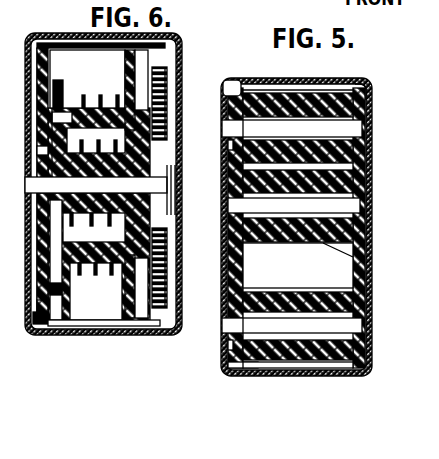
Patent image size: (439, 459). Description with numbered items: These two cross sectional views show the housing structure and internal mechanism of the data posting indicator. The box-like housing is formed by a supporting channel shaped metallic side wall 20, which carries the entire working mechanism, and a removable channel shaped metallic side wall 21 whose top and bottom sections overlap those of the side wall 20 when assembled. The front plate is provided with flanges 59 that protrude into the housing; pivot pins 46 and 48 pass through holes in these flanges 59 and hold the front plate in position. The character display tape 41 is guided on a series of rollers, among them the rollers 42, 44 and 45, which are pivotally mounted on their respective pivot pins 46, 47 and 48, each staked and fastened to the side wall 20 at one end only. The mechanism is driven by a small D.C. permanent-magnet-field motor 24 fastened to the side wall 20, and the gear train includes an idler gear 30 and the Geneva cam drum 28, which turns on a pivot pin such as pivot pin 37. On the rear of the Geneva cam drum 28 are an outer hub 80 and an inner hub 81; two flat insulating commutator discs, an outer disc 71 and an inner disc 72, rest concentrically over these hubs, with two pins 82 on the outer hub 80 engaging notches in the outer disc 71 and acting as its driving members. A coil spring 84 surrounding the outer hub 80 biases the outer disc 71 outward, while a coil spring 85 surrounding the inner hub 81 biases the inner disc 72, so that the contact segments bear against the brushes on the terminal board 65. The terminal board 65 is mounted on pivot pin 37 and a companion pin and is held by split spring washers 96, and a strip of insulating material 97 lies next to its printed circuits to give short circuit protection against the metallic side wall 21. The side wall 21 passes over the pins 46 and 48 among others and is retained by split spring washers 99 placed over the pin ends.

In FIG. 6, the supporting channel shaped metallic side wall 20 is at (162, 336).
In FIG. 5, the supporting channel shaped metallic side wall 20 is at (365, 376).
In FIG. 6, the removable channel shaped metallic side wall 21 is at (90, 337).
In FIG. 5, the removable channel shaped metallic side wall 21 is at (330, 372).
In FIG. 6, the D.C. permanent-magnet-field motor 24 is at (52, 4).
In FIG. 6, the Geneva cam drum 28 is at (135, 70).
In FIG. 6, the idler gear 30 is at (172, 71).
In FIG. 6, the pivot pin 37 is at (33, 185).
In FIG. 6, the character display tape 41 is at (118, 330).
In FIG. 5, the character display tape 41 is at (293, 370).
In FIG. 5, the roller 42 is at (280, 92).
In FIG. 5, the roller 44 is at (365, 262).
In FIG. 5, the roller 45 is at (258, 370).
In FIG. 5, the pivot pin 46 is at (222, 128).
In FIG. 5, the pivot pin 47 is at (355, 206).
In FIG. 5, the pivot pin 48 is at (222, 326).
In FIG. 5, the flanges 59 is at (236, 82).
In FIG. 6, the terminal board 65 is at (37, 337).
In FIG. 6, the outer commutator disc 71 is at (30, 75).
In FIG. 6, the inner commutator disc 72 is at (36, 150).
In FIG. 6, the outer hub 80 is at (85, 100).
In FIG. 6, the inner hub 81 is at (118, 100).
In FIG. 6, the pins 82 is at (50, 288).
In FIG. 6, the coil spring 84 is at (86, 260).
In FIG. 6, the coil spring 85 is at (70, 237).
In FIG. 6, the split spring washers 96 is at (33, 218).
In FIG. 6, the strip of insulating material 97 is at (36, 315).
In FIG. 5, the split spring washers 99 is at (228, 145).